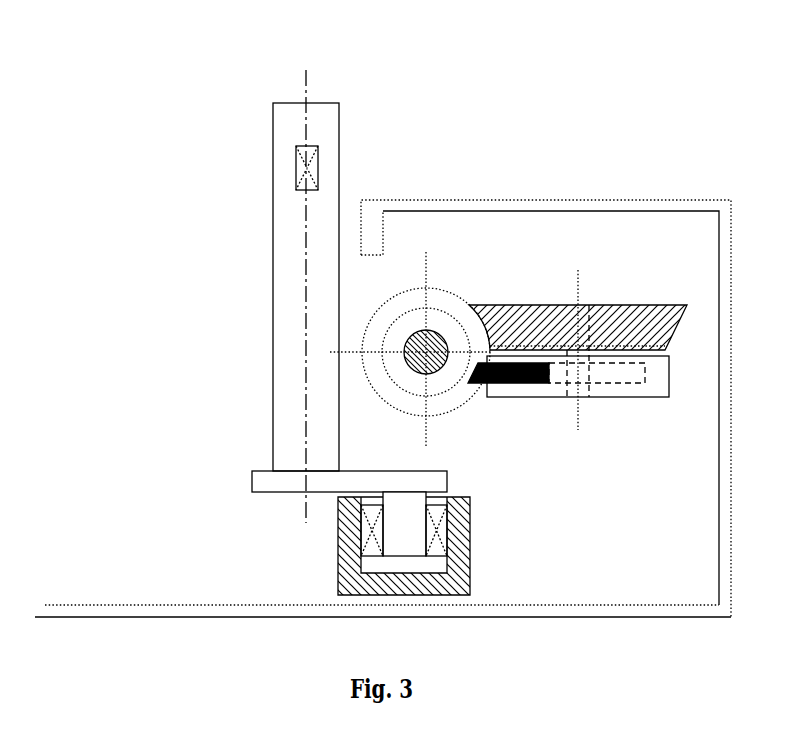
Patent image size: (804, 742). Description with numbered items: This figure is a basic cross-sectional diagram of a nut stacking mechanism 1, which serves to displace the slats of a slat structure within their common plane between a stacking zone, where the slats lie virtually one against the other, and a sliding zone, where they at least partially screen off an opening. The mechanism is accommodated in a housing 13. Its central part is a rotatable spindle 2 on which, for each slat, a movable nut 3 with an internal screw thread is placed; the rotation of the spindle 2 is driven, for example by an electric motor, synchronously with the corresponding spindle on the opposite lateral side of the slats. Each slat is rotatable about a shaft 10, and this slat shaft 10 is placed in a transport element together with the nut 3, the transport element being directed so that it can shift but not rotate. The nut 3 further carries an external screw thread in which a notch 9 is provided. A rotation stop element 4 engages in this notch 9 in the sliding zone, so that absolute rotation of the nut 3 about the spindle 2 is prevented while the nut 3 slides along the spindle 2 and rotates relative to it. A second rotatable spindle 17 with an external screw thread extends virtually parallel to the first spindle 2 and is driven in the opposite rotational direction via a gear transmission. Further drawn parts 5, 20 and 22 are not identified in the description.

The nut stacking mechanism 1 is at (186, 158).
The rotatable spindle 2 is at (418, 368).
The movable nut 3 is at (410, 322).
The rotation stop element 4 is at (519, 385).
The plate 5 is at (507, 320).
The notch 9 is at (462, 385).
The shaft 10 is at (280, 293).
The housing 13 is at (690, 207).
The second rotatable spindle 17 is at (436, 295).
The direction arrow 20 is at (621, 288).
The base drive 22 is at (340, 540).